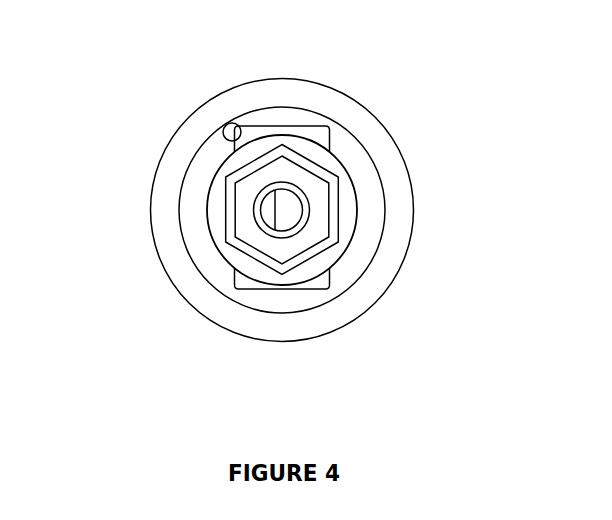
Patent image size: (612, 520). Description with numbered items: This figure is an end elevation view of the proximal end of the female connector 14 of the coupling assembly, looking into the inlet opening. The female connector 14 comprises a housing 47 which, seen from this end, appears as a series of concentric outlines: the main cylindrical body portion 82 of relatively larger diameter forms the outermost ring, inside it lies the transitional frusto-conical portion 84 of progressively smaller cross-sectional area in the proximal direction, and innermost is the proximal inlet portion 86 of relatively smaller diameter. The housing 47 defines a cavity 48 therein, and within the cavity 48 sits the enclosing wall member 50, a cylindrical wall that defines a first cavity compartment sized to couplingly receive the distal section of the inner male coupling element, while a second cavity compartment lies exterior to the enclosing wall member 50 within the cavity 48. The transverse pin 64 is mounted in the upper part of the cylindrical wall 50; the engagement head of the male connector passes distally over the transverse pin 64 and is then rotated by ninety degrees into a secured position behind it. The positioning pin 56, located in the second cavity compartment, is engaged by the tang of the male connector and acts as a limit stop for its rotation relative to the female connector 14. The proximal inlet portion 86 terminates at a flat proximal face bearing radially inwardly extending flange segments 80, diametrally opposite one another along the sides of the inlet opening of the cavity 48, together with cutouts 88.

The female connector 14 is at (330, 68).
The housing 47 is at (322, 320).
The cavity 48 is at (349, 233).
The enclosing wall member 50 is at (310, 210).
The positioning pin 56 is at (223, 133).
The transverse pin 64 is at (274, 210).
The flange segments 80 is at (352, 152).
The main cylindrical body portion 82 is at (387, 295).
The transitional frusto-conical portion 84 is at (210, 302).
The proximal inlet portion 86 is at (202, 277).
The cutouts 88 is at (278, 126).